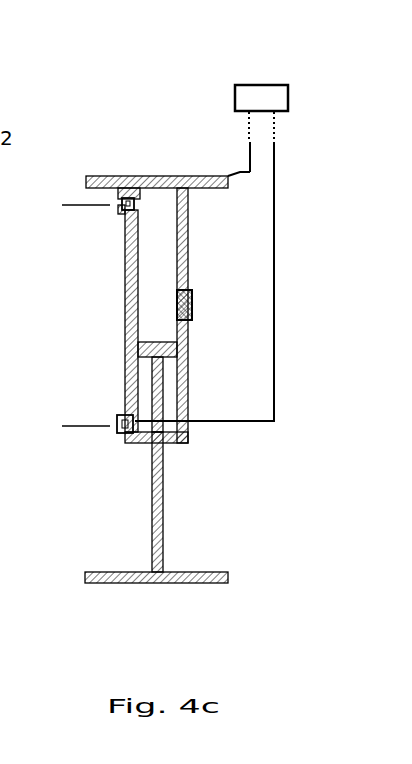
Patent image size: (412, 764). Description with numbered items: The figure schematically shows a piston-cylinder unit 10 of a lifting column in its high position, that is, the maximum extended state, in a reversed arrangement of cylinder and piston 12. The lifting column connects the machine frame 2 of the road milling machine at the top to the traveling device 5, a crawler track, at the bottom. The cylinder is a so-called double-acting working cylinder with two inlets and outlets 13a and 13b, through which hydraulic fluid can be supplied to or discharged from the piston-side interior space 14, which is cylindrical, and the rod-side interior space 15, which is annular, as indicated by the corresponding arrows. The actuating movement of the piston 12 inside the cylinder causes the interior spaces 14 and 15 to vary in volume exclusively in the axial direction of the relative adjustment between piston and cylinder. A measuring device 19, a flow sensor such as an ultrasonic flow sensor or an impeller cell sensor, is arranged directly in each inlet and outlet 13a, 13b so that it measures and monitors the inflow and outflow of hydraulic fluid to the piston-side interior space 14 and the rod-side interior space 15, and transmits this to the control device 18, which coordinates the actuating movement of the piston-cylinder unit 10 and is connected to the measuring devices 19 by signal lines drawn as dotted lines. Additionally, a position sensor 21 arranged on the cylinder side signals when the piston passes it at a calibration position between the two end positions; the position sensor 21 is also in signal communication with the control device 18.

The machine frame 2 is at (118, 180).
The traveling device 5 is at (125, 583).
The piston-cylinder unit 10 is at (103, 315).
The piston 12 is at (152, 520).
The inlet and outlet 13a is at (106, 205).
The inlet and outlet 13b is at (106, 426).
The piston-side interior space 14 is at (150, 295).
The rod-side interior space 15 is at (145, 388).
The control device 18 is at (261, 98).
The measuring device 19 is at (132, 196).
The position sensor 21 is at (193, 302).